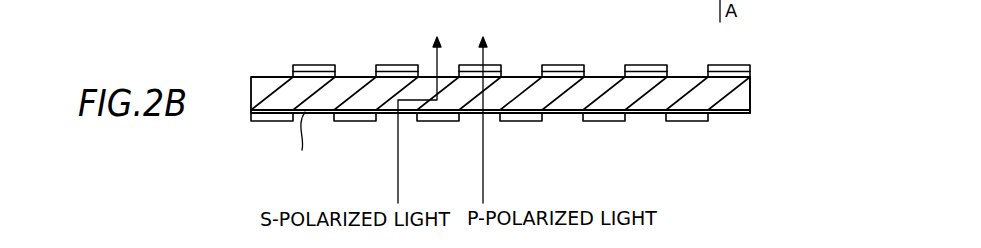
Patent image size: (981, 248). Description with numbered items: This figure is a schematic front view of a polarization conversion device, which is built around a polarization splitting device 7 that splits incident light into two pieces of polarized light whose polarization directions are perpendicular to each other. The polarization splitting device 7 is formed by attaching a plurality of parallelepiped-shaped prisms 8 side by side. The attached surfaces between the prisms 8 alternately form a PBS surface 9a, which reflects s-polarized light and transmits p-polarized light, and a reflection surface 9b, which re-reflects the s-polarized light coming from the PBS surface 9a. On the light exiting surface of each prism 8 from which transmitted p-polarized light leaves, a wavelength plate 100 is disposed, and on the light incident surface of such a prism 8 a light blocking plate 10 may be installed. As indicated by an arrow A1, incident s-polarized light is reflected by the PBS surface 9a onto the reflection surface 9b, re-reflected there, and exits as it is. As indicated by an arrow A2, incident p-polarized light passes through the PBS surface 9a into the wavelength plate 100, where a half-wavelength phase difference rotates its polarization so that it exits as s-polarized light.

The polarization splitting device 7 is at (763, 91).
The prism 8 is at (283, 112).
The PBS surface 9a is at (386, 113).
The reflection surface 9b is at (430, 113).
The light blocking plate 10 is at (603, 122).
The wavelength plate 100 is at (313, 63).
The arrow A1 is at (398, 188).
The arrow A2 is at (483, 185).